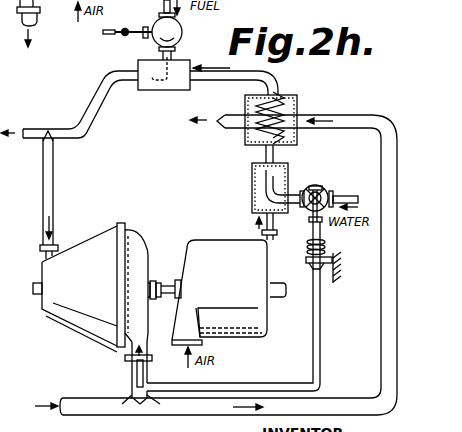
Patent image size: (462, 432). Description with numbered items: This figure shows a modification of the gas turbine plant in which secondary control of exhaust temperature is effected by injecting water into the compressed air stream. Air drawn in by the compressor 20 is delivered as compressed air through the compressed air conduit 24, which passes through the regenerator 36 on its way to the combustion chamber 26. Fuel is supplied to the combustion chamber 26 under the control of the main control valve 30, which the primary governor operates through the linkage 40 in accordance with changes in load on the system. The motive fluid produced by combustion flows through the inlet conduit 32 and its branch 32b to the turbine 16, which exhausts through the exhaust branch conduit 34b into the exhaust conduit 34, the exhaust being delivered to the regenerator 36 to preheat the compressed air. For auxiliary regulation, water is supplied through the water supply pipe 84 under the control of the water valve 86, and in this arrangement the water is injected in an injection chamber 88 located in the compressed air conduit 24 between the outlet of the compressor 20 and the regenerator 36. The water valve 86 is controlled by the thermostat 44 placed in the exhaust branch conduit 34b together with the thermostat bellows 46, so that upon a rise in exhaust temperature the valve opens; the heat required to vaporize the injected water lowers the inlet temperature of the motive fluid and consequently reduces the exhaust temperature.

The turbine 16 is at (97, 247).
The compressor 20 is at (222, 240).
The compressed air conduit 24 is at (265, 155).
The combustion chamber 26 is at (178, 90).
The main control valve 30 is at (182, 39).
The inlet conduit 32 is at (98, 104).
The inlet conduit branch 32b is at (54, 182).
The exhaust conduit 34 is at (333, 401).
The exhaust branch conduit 34b is at (147, 375).
The regenerator 36 is at (297, 101).
The linkage 40 is at (110, 34).
The thermostat 44 is at (132, 368).
The thermostat bellows 46 is at (327, 244).
The water supply pipe 84 is at (346, 195).
The water valve 86 is at (306, 208).
The injection chamber 88 is at (289, 177).